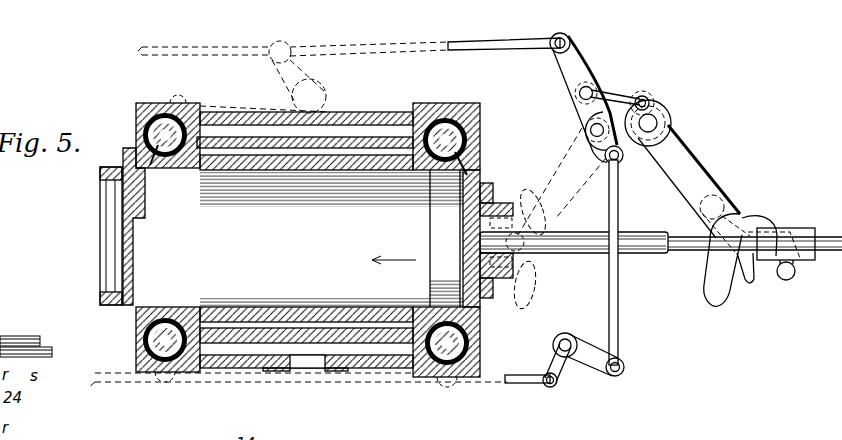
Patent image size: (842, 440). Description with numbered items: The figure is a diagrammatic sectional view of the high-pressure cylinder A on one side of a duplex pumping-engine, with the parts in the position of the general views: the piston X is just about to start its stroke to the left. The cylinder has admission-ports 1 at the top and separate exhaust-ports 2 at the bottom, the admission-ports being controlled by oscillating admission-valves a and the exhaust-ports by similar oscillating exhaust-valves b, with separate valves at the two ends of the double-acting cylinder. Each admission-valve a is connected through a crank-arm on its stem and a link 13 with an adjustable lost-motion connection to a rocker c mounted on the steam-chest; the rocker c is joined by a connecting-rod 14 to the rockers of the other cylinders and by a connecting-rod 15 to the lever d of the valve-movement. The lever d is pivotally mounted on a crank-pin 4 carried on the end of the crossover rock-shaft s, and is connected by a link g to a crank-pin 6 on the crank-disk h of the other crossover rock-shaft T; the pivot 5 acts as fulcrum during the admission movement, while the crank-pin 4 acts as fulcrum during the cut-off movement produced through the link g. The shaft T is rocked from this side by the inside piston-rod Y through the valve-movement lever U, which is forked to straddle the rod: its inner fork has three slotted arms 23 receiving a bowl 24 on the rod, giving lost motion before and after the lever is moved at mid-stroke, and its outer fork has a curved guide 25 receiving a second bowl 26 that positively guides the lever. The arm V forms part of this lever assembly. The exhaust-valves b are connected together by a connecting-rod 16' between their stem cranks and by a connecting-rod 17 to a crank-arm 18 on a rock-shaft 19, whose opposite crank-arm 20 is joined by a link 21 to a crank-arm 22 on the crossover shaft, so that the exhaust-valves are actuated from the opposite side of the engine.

The admission-port 1 is at (124, 150).
The exhaust-port 2 is at (128, 313).
The admission-valve a is at (148, 124).
The exhaust-valve b is at (150, 343).
The cylinder A is at (331, 239).
The piston X is at (445, 238).
The link 13 is at (255, 107).
The connecting-rod 14 is at (222, 47).
The connecting-rod 15 is at (468, 37).
The rocker c is at (300, 86).
The lever d is at (586, 71).
The pivot 5 is at (579, 93).
The crossover rock-shaft s is at (589, 125).
The crank-pin 4 is at (621, 157).
The link g is at (613, 92).
The crank-pin 6 is at (646, 96).
The crank-disk h is at (661, 109).
The crossover rock-shaft T is at (655, 123).
The arm V is at (689, 181).
The valve-movement lever U is at (562, 181).
The crank-arm 22 is at (554, 240).
The inside piston-rod Y is at (650, 254).
The link 21 is at (620, 334).
The connecting-rod 16' is at (297, 387).
The connecting-rod 17 is at (530, 384).
The crank-arm 18 is at (549, 364).
The rock-shaft 19 is at (563, 338).
The crank-arm 20 is at (605, 370).
The slotted arm 23 is at (727, 206).
The bowl 24 is at (790, 227).
The curved guide 25 is at (751, 284).
The bowl 26 is at (793, 275).